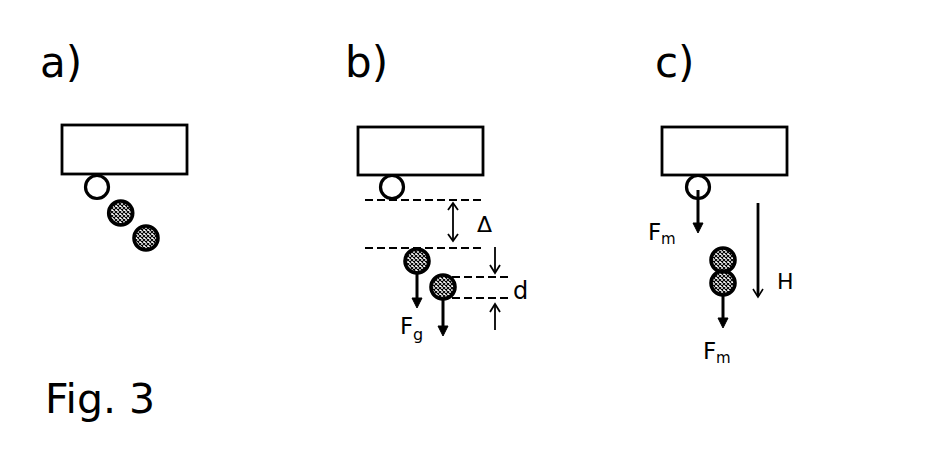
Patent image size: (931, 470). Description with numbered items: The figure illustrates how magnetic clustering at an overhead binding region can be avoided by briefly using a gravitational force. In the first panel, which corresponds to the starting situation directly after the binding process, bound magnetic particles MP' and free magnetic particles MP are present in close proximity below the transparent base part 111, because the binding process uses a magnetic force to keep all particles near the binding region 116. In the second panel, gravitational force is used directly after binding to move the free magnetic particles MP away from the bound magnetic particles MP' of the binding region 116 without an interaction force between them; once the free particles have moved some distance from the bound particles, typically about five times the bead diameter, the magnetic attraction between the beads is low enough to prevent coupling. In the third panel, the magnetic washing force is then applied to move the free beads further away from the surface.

The transparent base part 111 is at (143, 164).
The binding region 116 is at (166, 182).
The free magnetic particles MP is at (102, 231).
The bound magnetic particles MP' is at (70, 199).